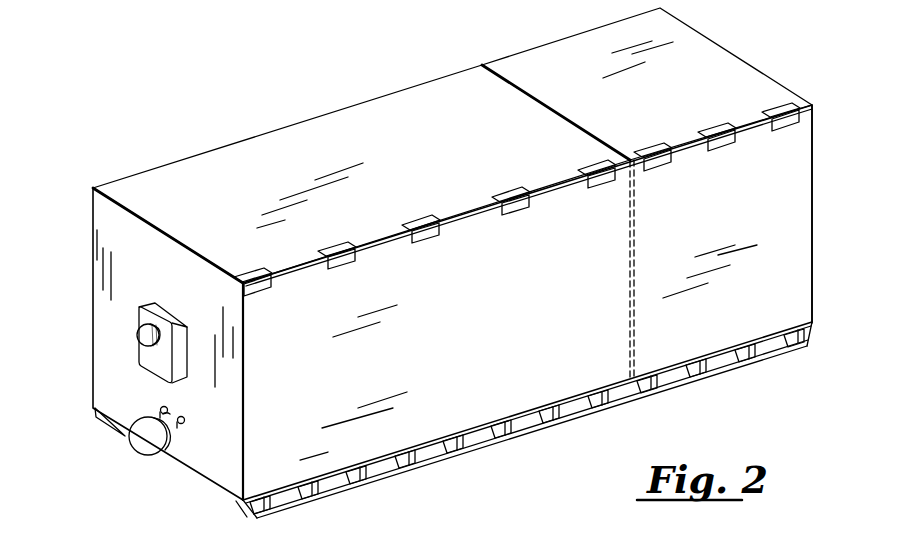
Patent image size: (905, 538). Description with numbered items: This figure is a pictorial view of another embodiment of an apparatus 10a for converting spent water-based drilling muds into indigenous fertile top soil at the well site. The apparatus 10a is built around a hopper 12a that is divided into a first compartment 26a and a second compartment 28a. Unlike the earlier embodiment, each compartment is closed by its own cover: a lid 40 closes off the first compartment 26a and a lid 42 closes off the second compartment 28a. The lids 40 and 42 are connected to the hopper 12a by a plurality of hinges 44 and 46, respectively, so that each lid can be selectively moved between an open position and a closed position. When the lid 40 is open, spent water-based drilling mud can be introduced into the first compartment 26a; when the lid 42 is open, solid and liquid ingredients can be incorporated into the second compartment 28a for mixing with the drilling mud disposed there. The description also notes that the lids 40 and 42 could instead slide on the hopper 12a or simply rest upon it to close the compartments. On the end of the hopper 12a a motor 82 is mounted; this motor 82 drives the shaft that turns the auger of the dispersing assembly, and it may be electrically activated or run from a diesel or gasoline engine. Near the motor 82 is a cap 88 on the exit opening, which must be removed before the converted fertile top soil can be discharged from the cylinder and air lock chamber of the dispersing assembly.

The apparatus 10a is at (423, 40).
The hopper 12a is at (86, 252).
The first compartment 26a is at (793, 181).
The second compartment 28a is at (262, 433).
The lid 40 is at (735, 63).
The lid 42 is at (277, 143).
The hinges 44 is at (725, 120).
The hinges 46 is at (338, 240).
The motor 82 is at (125, 337).
The cap 88 is at (126, 445).